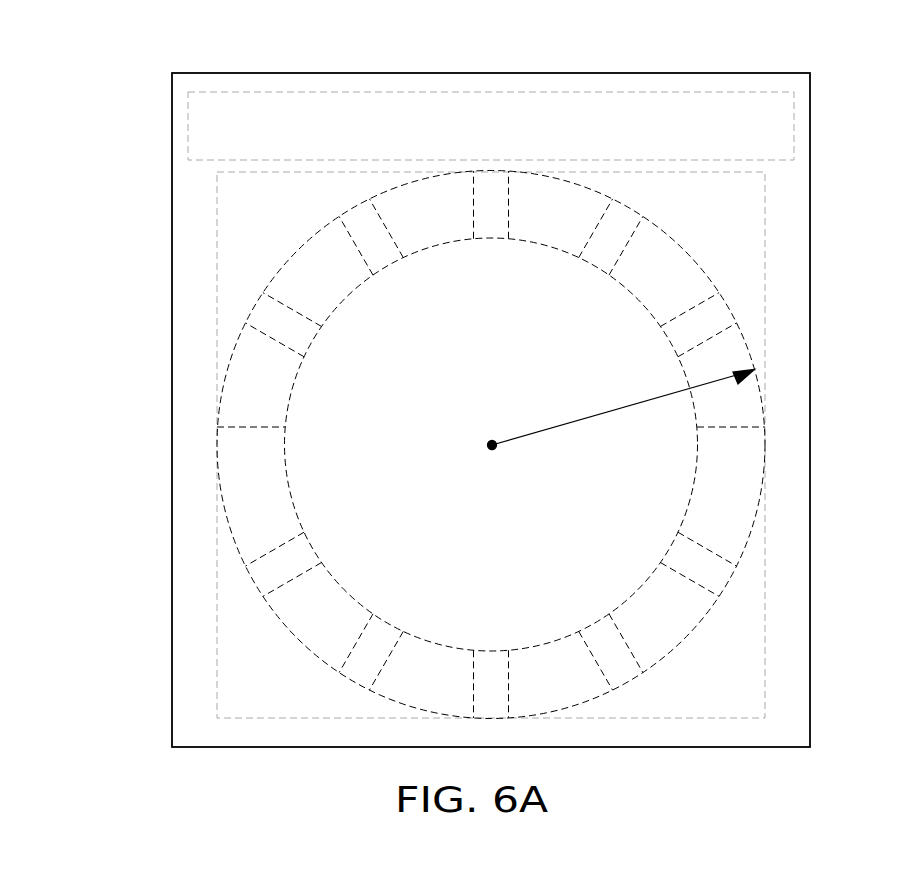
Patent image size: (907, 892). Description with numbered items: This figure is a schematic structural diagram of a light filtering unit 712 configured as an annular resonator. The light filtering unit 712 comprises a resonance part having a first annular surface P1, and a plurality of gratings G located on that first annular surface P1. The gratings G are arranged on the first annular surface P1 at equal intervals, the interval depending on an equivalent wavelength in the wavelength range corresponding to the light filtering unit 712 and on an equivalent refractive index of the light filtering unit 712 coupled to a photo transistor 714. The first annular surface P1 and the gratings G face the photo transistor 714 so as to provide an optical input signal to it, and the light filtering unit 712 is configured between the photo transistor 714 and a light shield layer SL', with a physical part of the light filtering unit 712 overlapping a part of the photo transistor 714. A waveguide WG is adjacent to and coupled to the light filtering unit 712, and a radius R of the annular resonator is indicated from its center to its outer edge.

The light filtering unit 712 is at (273, 277).
The photo transistor 714 is at (738, 242).
The first annular surface P1 is at (263, 387).
The gratings G is at (247, 445).
The light shield layer SL' is at (531, 410).
The waveguide WG is at (491, 105).
The radius of grating R is at (621, 410).